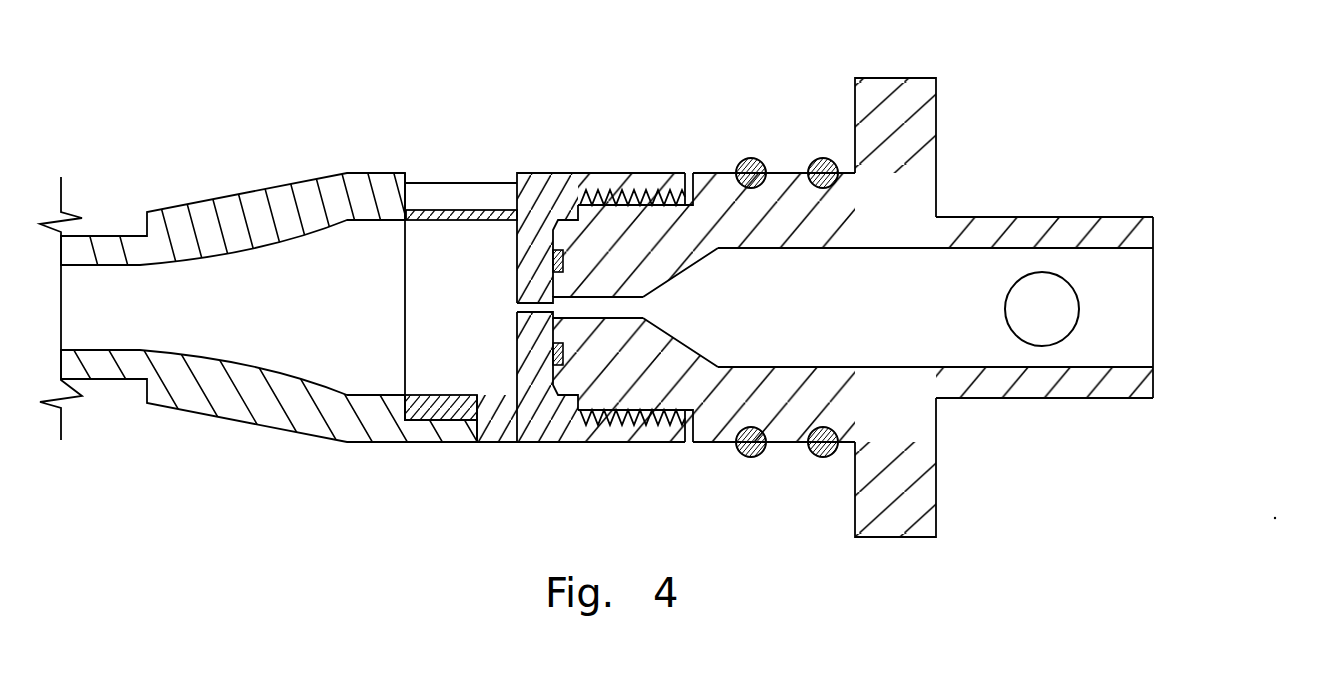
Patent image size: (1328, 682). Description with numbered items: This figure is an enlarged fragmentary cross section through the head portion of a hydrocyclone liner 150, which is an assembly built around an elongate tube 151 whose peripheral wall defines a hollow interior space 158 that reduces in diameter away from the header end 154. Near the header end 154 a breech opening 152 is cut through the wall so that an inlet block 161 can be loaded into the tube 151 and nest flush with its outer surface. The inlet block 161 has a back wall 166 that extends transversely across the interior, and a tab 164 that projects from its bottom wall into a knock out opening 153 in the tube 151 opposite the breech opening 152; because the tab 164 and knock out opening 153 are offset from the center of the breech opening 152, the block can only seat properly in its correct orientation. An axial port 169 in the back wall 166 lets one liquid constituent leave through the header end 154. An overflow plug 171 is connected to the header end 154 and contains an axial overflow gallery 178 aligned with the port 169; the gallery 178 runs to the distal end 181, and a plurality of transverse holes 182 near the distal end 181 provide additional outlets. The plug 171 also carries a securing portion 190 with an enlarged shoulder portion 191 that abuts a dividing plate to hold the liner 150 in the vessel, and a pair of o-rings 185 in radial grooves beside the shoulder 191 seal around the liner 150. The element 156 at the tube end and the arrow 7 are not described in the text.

The direction arrow 7 is at (1226, 308).
The liner 150 is at (628, 138).
The elongate tube 151 is at (275, 430).
The breech opening 152 is at (402, 175).
The knock out opening 153 is at (478, 443).
The header end 154 is at (690, 444).
The tube end 156 is at (108, 381).
The hollow interior space 158 is at (342, 323).
The inlet block 161 is at (540, 175).
The tab 164 is at (566, 444).
The back wall 166 is at (520, 363).
The axial port 169 is at (520, 308).
The overflow plug 171 is at (1045, 216).
The axial overflow gallery 178 is at (714, 316).
The distal end 181 is at (1156, 232).
The holes 182 is at (1022, 325).
The o-rings 185 is at (751, 158).
The securing portion 190 is at (842, 551).
The shoulder portion 191 is at (922, 78).